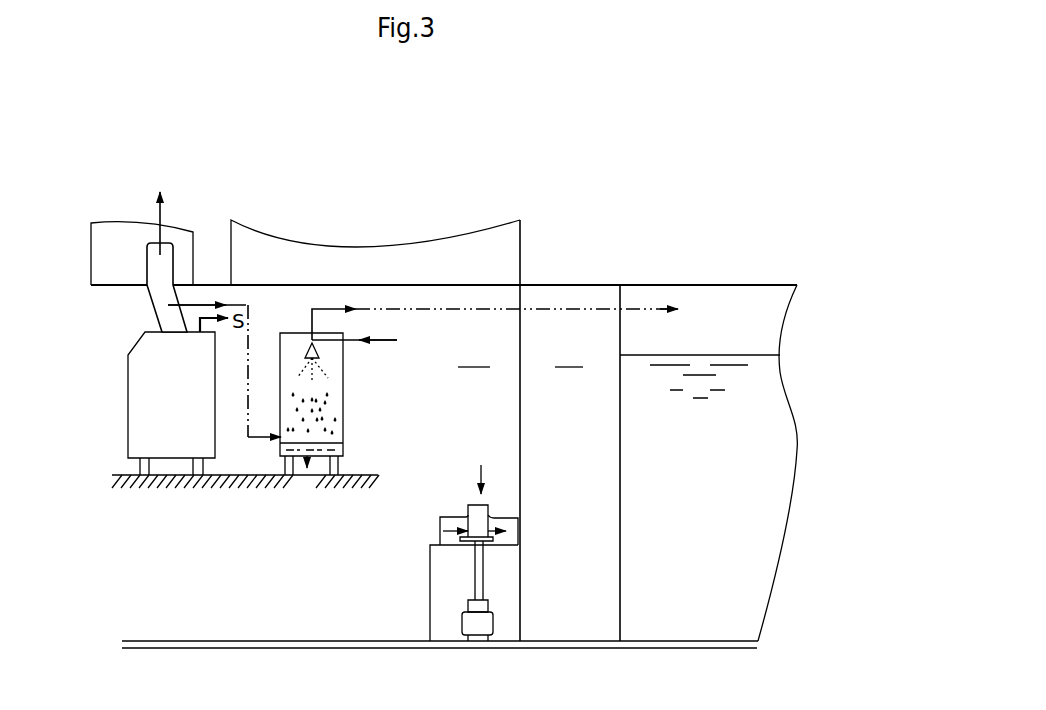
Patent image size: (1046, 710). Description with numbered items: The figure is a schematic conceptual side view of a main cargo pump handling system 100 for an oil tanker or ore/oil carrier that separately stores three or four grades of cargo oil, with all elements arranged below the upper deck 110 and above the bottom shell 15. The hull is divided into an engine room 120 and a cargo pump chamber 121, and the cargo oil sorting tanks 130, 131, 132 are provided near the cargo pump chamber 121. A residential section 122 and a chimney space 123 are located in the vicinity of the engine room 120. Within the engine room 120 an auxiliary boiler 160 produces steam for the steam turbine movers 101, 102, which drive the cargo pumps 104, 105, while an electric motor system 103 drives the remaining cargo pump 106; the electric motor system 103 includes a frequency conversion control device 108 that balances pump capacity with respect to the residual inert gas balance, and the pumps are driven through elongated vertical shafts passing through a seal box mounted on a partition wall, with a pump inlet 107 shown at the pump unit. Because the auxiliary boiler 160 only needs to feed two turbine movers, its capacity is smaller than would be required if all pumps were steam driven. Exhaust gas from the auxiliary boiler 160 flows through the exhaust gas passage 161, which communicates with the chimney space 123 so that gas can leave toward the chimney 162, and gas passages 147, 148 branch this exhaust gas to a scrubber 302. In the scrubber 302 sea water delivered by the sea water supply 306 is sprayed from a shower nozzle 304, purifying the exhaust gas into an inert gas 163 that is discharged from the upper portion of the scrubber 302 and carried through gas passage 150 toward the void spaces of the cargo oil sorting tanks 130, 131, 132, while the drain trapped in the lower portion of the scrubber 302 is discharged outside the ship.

The bottom shell 15 is at (667, 648).
The main cargo pump handling system 100 is at (538, 200).
The mover of steam turbine 101 is at (537, 495).
The mover of steam turbine 102 is at (480, 522).
The electric motor system 103 is at (537, 495).
The cargo pump driven by steam turbine 104 is at (530, 591).
The cargo pump driven by steam turbine 105 is at (490, 620).
The cargo pump driven by electric motor 106 is at (530, 591).
The inlet port 107 is at (465, 523).
The frequency conversion control device 108 is at (443, 537).
The upper deck 110 is at (567, 285).
The engine room 120 is at (474, 356).
The cargo pump chamber 121 is at (551, 470).
The residential section 122 is at (475, 242).
The chimney space 123 is at (122, 248).
The cargo oil sorting tank 130 is at (708, 437).
The cargo oil sorting tank 131 is at (708, 437).
The cargo oil sorting tank 132 is at (708, 310).
The gas passage 147 is at (208, 305).
The gas passage 148 is at (255, 437).
The gas passage 150 is at (325, 309).
The auxiliary boiler 160 is at (128, 380).
The exhaust gas passage 161 is at (170, 315).
The toward chimney 162 is at (163, 210).
The inert gas 163 is at (287, 357).
The scrubber 302 is at (343, 397).
The shower nozzle 304 is at (310, 347).
The sea water supply 306 is at (381, 341).